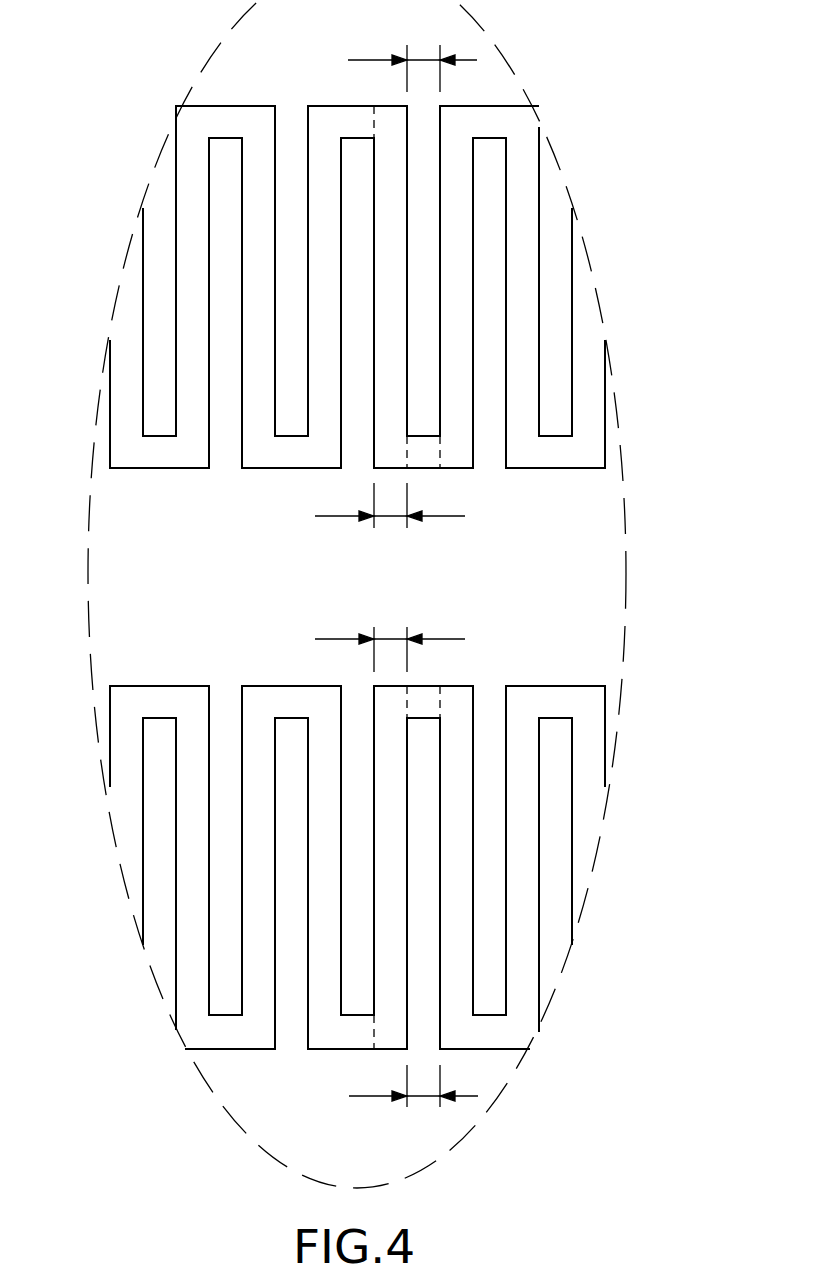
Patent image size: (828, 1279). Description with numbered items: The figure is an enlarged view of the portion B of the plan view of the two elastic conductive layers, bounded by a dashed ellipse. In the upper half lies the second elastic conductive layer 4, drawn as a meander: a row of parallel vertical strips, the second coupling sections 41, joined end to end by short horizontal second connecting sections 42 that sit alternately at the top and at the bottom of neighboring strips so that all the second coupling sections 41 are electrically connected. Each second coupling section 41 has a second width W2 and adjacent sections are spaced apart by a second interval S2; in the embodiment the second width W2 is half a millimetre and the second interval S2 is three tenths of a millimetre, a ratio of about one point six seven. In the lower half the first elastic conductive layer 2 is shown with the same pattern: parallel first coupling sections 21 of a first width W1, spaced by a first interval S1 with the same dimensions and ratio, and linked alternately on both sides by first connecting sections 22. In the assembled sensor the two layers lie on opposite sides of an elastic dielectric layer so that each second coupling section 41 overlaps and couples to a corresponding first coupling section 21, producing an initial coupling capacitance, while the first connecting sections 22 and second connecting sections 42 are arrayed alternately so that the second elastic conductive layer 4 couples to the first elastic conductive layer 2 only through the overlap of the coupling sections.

The first elastic conductive layer 2 is at (595, 726).
The first coupling section 21 is at (390, 871).
The first connecting section 22 is at (422, 693).
The second elastic conductive layer 4 is at (595, 402).
The second coupling section 41 is at (390, 277).
The second connecting section 42 is at (426, 460).
The portion B is at (626, 588).
The first interval S1 is at (413, 1085).
The second interval S2 is at (412, 59).
The first width W1 is at (388, 640).
The second width W2 is at (388, 505).